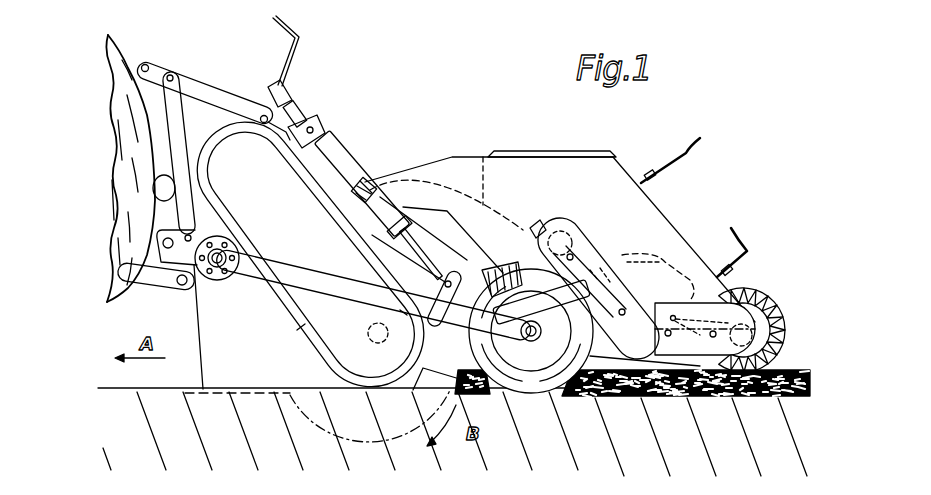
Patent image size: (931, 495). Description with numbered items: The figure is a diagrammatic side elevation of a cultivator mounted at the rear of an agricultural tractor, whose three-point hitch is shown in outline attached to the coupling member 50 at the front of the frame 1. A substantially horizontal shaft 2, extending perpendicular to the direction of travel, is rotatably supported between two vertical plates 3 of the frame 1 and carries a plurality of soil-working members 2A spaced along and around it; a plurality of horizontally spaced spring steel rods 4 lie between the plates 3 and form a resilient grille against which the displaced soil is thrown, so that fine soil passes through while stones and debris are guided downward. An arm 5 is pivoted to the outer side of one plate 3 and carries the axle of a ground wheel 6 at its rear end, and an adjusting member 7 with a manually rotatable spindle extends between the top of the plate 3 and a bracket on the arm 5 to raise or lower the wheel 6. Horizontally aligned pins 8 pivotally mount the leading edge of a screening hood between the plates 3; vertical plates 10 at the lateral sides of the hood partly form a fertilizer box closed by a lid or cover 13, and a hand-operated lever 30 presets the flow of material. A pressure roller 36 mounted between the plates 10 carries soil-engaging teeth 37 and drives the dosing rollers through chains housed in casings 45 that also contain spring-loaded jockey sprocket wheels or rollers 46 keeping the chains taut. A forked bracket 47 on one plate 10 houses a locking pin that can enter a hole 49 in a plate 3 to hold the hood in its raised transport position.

The frame 1 is at (197, 320).
The shaft 2 is at (367, 334).
The soil-working members 2A is at (437, 393).
The vertical plates 3 is at (205, 365).
The spring steel rods 4 is at (458, 243).
The arm 5 is at (296, 268).
The ground wheel 6 is at (528, 396).
The adjusting member 7 is at (290, 63).
The pins 8 is at (368, 181).
The vertical plates 10 is at (621, 164).
The lid or cover 13 is at (516, 154).
The lever 30 is at (733, 232).
The pressure roller 36 is at (766, 313).
The soil-engaging teeth 37 is at (763, 291).
The casings 45 is at (648, 302).
The jockey sprocket wheels or rollers 46 is at (622, 256).
The forked bracket 47 is at (522, 263).
The hole 49 is at (418, 291).
The coupling member 50 is at (213, 93).